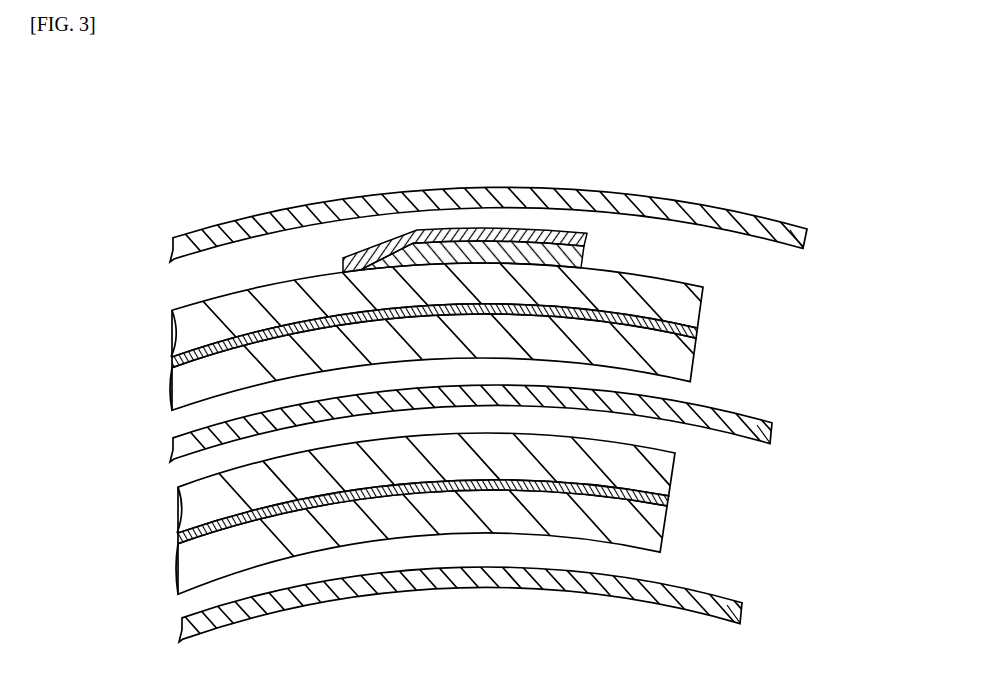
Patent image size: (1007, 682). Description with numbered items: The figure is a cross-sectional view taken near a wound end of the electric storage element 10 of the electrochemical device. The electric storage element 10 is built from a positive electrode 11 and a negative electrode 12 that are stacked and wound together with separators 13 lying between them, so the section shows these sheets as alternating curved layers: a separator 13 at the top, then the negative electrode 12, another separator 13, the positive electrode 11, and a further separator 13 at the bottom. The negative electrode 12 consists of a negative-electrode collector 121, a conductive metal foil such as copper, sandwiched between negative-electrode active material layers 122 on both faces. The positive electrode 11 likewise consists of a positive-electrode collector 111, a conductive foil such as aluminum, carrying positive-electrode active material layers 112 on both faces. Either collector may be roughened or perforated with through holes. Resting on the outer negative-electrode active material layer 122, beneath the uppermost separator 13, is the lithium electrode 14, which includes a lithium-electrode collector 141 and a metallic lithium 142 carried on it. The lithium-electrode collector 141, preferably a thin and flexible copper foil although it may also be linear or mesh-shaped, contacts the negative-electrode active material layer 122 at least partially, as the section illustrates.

The electric storage element 10 is at (777, 129).
The positive electrode 11 is at (540, 515).
The positive-electrode collector 111 is at (665, 500).
The positive-electrode active material layers 112 is at (653, 477).
The negative electrode 12 is at (547, 337).
The negative-electrode collector 121 is at (662, 333).
The negative-electrode active material layers 122 is at (678, 302).
The separator 13 is at (788, 229).
The lithium electrode 14 is at (465, 167).
The lithium-electrode collector 141 is at (436, 256).
The metallic lithium 142 is at (478, 252).